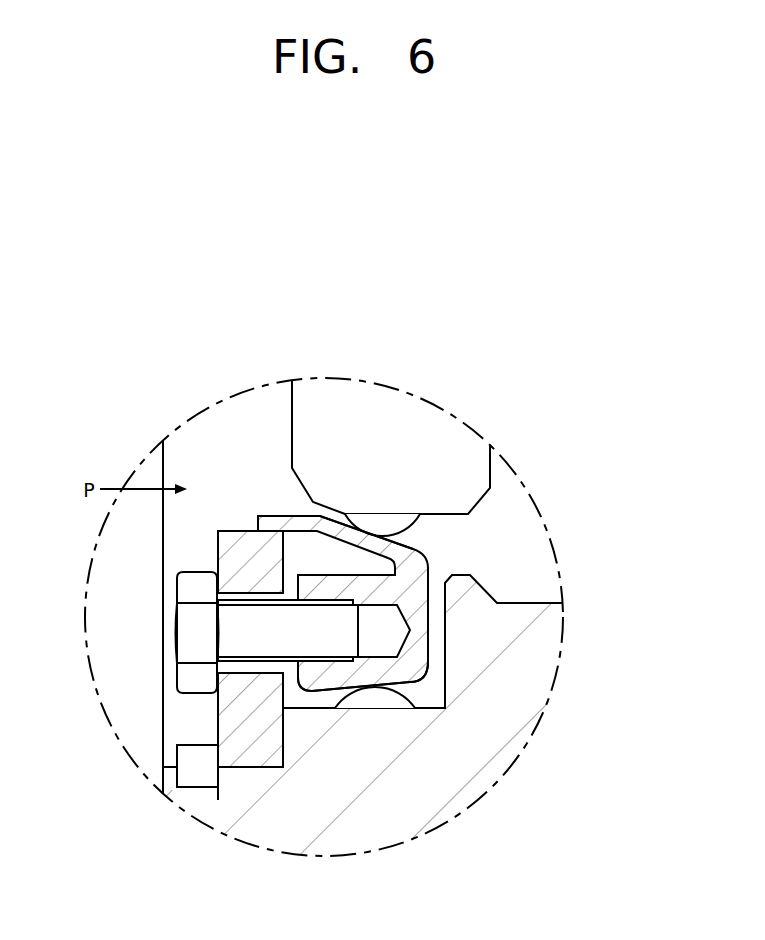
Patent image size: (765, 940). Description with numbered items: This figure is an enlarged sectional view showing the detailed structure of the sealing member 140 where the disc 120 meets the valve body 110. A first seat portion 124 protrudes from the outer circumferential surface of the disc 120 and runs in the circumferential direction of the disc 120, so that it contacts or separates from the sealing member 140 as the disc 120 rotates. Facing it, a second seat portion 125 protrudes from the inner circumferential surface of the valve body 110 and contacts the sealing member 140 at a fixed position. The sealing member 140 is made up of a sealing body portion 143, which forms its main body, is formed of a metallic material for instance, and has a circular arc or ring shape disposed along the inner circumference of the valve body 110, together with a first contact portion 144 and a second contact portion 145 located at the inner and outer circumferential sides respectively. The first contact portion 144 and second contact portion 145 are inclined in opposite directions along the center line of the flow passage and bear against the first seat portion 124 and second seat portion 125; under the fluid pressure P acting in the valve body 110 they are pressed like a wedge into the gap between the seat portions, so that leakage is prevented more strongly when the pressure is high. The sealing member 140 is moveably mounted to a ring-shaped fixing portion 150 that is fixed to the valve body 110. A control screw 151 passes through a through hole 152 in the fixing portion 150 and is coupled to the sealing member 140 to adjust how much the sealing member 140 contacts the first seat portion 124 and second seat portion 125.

The valve body 110 is at (310, 793).
The disc 120 is at (323, 403).
The first seat portion 124 is at (380, 535).
The second seat portion 125 is at (388, 702).
The sealing member 140 is at (428, 545).
The sealing body portion 143 is at (417, 603).
The first contact portion 144 is at (283, 520).
The second contact portion 145 is at (417, 682).
The fixing portion 150 is at (157, 655).
The control screw 151 is at (242, 627).
The through hole 152 is at (242, 670).